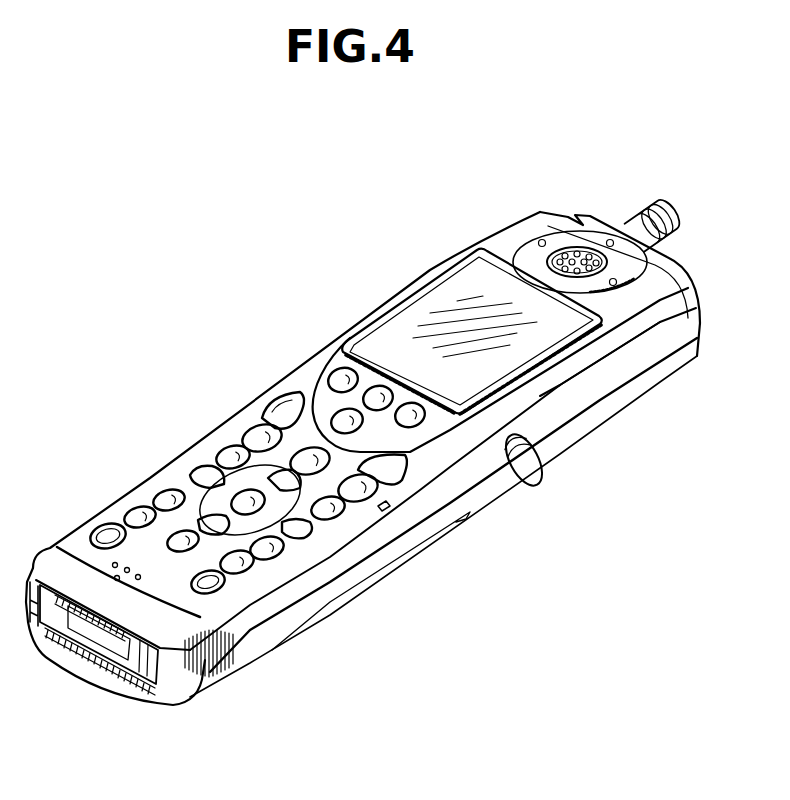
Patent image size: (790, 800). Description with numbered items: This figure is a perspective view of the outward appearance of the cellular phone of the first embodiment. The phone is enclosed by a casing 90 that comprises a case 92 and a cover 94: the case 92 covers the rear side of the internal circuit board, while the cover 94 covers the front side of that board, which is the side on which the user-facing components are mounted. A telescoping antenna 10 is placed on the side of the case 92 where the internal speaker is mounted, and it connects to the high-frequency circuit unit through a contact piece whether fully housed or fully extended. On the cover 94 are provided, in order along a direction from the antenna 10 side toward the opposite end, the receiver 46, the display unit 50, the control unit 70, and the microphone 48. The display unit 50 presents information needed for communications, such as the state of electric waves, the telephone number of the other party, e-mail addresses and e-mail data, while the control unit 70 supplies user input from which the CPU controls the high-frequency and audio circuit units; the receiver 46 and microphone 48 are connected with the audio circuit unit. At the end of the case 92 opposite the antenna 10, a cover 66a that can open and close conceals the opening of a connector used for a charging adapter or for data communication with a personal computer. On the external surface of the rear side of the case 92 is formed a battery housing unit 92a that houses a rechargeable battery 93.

The antenna 10 is at (635, 200).
The receiver 46 is at (570, 247).
The microphone 48 is at (115, 565).
The display unit 50 is at (448, 297).
The cover 66a is at (110, 640).
The control unit 70 is at (248, 500).
The casing 90 is at (384, 458).
The case 92 is at (633, 390).
The battery housing unit 92a is at (403, 558).
The rechargeable battery 93 is at (347, 603).
The cover 94 is at (663, 343).